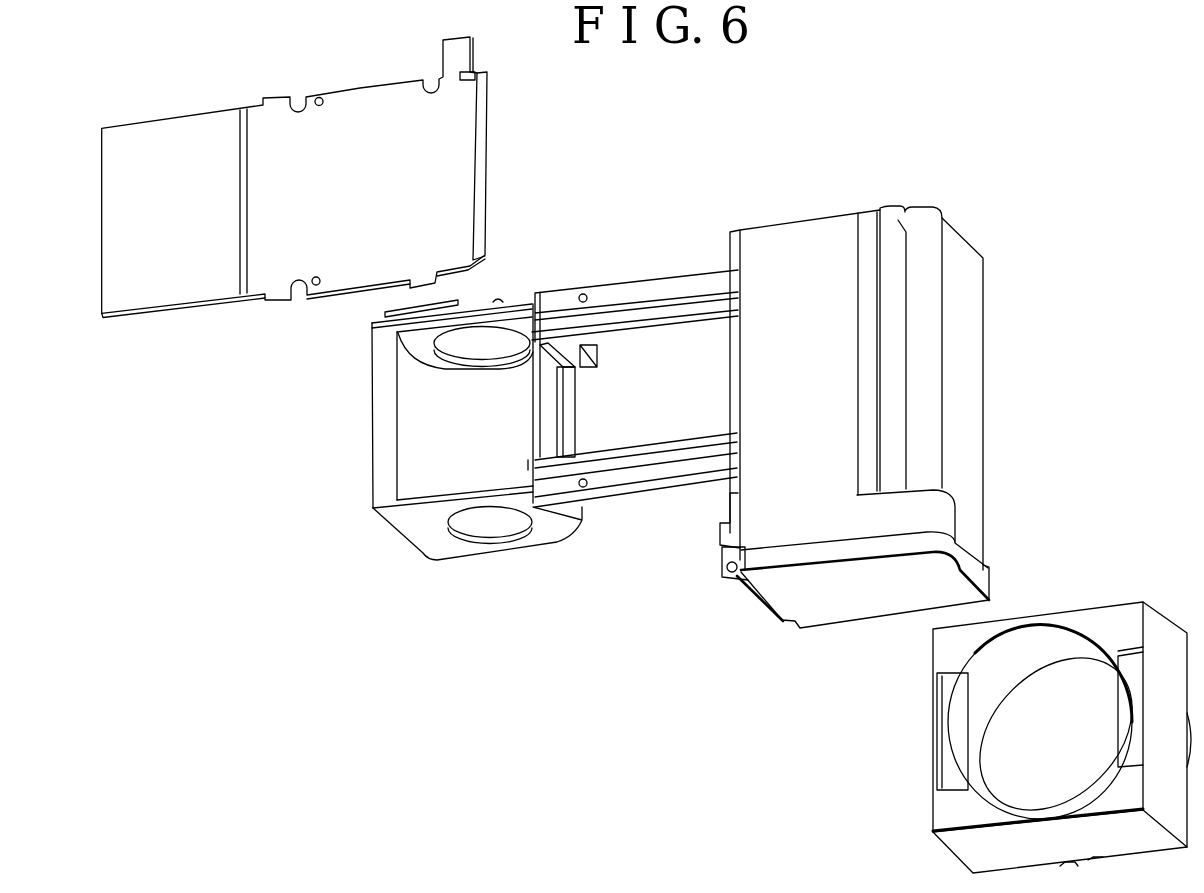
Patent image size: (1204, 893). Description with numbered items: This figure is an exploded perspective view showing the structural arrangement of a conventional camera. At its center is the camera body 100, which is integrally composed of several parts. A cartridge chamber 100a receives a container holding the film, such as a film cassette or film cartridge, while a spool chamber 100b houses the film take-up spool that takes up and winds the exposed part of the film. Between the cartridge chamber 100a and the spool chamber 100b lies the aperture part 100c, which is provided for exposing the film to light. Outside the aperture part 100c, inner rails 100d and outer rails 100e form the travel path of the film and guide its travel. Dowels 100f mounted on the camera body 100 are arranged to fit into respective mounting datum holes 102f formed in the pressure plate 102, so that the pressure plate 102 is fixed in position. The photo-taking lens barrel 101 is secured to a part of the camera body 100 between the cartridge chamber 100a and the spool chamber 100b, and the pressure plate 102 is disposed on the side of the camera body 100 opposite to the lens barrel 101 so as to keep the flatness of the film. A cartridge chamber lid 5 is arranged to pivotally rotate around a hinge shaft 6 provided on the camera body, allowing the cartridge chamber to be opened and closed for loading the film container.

The cartridge chamber lid 5 is at (853, 612).
The hinge shaft 6 is at (732, 582).
The camera body 100 is at (922, 363).
The cartridge chamber 100a is at (975, 372).
The spool chamber 100b is at (499, 299).
The aperture part 100c is at (637, 430).
The inner rails 100d is at (713, 280).
The outer rails 100e is at (659, 290).
The dowels 100f is at (583, 294).
The photo-taking lens barrel 101 is at (1086, 603).
The pressure plate 102 is at (486, 133).
The mounting datum holes 102f is at (318, 97).